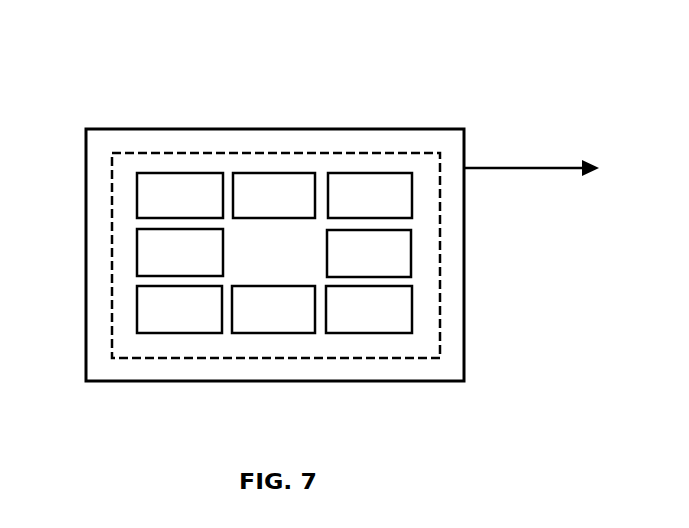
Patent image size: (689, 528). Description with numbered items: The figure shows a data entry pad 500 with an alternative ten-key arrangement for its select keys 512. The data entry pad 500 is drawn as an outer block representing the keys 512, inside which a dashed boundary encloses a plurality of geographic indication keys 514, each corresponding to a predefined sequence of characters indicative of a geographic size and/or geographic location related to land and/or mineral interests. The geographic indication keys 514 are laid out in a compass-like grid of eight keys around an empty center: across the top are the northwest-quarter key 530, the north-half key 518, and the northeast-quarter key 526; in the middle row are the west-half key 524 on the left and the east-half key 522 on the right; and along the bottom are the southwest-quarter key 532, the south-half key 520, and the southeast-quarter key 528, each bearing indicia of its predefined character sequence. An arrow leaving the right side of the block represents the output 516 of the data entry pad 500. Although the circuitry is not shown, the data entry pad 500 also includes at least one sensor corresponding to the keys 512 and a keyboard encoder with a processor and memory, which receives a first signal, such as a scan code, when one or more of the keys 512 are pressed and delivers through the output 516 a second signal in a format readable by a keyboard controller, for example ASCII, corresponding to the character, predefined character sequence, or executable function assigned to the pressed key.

The data entry pad 500 is at (134, 34).
The keys 512 is at (94, 207).
The geographic indication keys 514 is at (335, 153).
The output 516 is at (523, 168).
The "N/2" key indicia 518 is at (256, 173).
The "S/2" key indicia 520 is at (272, 333).
The "E/2" key indicia 522 is at (411, 253).
The "W/2" key indicia 524 is at (137, 251).
The "NE/4" key indicia 526 is at (376, 173).
The "SE/4" key indicia 528 is at (365, 333).
The "NW/4" key indicia 530 is at (176, 173).
The "SW/4" key indicia 532 is at (178, 333).